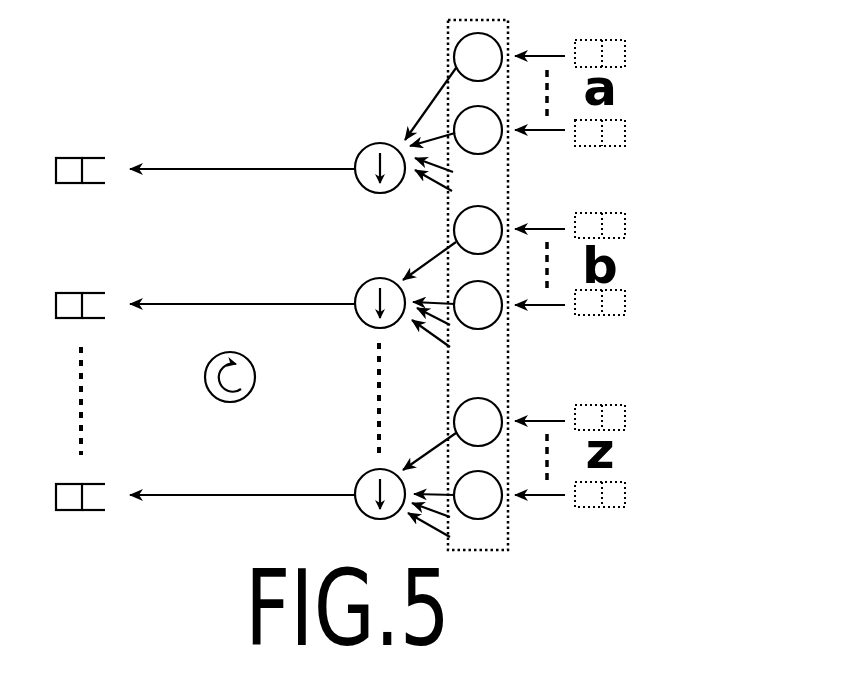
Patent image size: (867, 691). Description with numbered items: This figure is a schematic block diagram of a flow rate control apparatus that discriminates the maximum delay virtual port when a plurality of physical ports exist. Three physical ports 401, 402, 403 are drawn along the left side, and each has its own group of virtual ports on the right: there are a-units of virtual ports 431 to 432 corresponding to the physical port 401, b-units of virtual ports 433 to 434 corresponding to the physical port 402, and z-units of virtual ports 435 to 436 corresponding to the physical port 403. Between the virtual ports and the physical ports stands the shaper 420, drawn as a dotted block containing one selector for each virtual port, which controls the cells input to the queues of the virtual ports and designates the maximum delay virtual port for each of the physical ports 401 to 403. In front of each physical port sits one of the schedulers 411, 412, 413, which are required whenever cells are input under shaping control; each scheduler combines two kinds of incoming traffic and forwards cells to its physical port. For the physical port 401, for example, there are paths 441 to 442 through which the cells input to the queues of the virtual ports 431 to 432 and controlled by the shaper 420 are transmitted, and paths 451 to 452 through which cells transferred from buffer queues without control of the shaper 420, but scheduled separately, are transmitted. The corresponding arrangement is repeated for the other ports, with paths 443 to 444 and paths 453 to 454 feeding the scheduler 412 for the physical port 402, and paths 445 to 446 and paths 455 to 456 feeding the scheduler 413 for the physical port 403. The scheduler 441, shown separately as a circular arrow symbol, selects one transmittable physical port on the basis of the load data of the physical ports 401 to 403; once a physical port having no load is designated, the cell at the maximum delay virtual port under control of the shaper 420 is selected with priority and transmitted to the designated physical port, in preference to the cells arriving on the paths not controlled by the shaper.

The physical port 401 is at (78, 158).
The physical port 402 is at (76, 293).
The physical port 403 is at (80, 485).
The scheduler 411 is at (363, 150).
The scheduler 412 is at (363, 286).
The scheduler 413 is at (363, 477).
The shaper 420 is at (511, 23).
The virtual port 431 is at (627, 53).
The virtual port 432 is at (627, 132).
The virtual port 433 is at (627, 227).
The virtual port 434 is at (627, 300).
The virtual port 435 is at (627, 417).
The virtual port 436 is at (627, 494).
The scheduler 441 is at (437, 92).
The path 442 is at (430, 132).
The path 443 is at (438, 260).
The path 444 is at (438, 300).
The path 445 is at (440, 428).
The path 446 is at (438, 490).
The path 451 is at (462, 166).
The path 452 is at (462, 190).
The path 453 is at (460, 332).
The path 454 is at (460, 356).
The path 455 is at (458, 521).
The path 456 is at (458, 543).